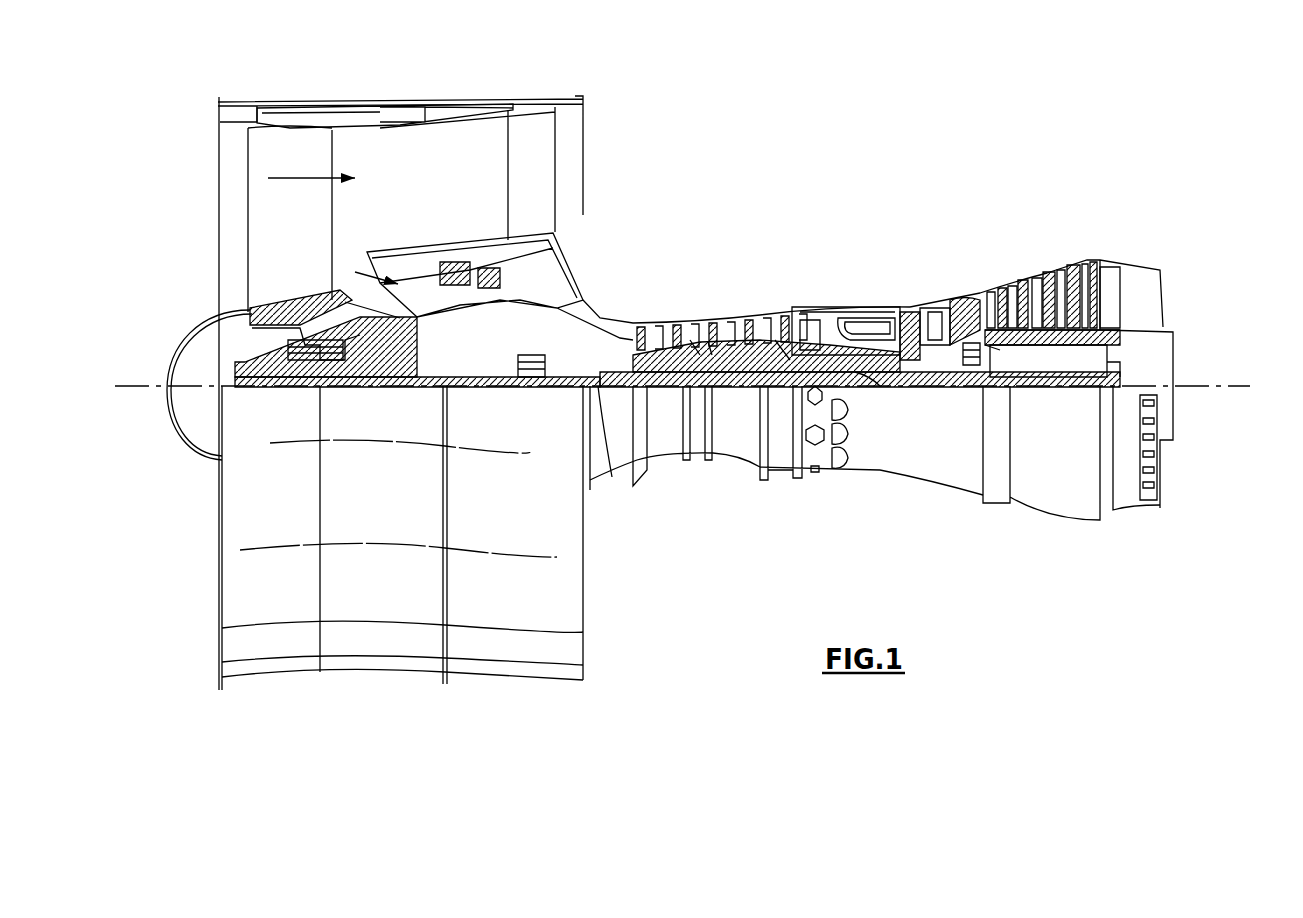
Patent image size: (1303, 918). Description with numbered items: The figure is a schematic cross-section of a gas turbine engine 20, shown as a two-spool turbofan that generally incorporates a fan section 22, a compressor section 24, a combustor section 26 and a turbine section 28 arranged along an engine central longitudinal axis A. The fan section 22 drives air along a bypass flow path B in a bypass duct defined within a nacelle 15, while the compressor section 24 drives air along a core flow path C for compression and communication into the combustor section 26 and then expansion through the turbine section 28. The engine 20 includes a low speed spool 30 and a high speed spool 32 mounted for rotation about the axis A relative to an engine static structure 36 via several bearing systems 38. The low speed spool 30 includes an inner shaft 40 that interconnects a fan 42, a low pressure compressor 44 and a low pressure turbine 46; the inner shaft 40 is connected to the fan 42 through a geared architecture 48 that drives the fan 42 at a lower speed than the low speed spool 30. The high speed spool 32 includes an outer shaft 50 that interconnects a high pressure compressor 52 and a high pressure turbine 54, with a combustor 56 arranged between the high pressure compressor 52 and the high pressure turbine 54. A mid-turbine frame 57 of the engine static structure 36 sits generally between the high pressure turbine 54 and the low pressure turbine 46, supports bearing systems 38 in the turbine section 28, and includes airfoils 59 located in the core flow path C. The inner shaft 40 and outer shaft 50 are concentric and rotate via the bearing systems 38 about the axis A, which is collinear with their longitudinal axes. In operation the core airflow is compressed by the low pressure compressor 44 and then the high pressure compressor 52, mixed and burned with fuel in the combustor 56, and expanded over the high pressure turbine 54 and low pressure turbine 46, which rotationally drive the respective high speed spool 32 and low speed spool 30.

The gas turbine engine 20 is at (862, 155).
The fan section 22 is at (330, 95).
The nacelle 15 is at (400, 106).
The fan 42 is at (304, 232).
The low pressure compressor 44 is at (500, 300).
The compressor section 24 is at (630, 296).
The high pressure compressor 52 is at (715, 338).
The high speed spool 32 is at (783, 340).
The combustor section 26 is at (853, 283).
The combustor 56 is at (862, 330).
The high pressure turbine 54 is at (920, 320).
The mid-turbine frame 57 is at (962, 293).
The turbine section 28 is at (1000, 250).
The low pressure turbine 46 is at (1050, 275).
The airfoils 59 is at (985, 348).
The geared architecture 48 is at (410, 372).
The bearing systems 38 is at (543, 375).
The inner shaft 40 is at (608, 460).
The low speed spool 30 is at (740, 392).
The engine static structure 36 is at (780, 480).
The outer shaft 50 is at (865, 385).
The engine central longitudinal axis A is at (1248, 386).
The bypass flow path B is at (312, 177).
The core flow path C is at (355, 272).